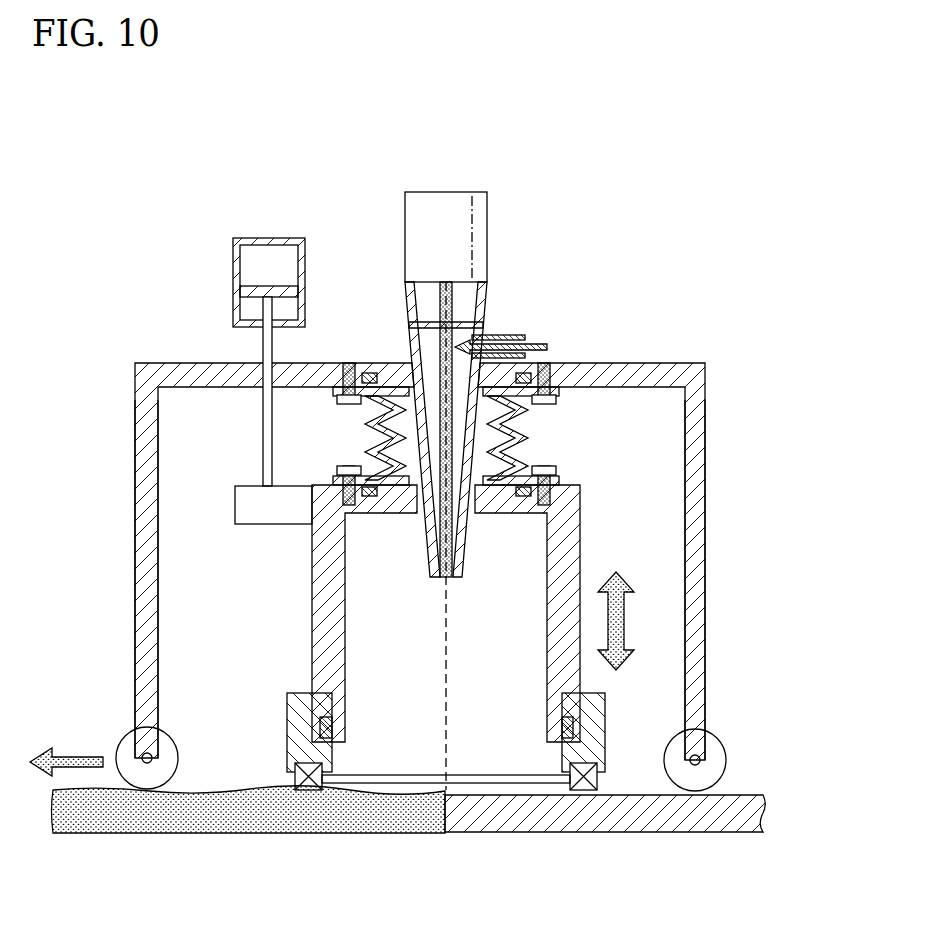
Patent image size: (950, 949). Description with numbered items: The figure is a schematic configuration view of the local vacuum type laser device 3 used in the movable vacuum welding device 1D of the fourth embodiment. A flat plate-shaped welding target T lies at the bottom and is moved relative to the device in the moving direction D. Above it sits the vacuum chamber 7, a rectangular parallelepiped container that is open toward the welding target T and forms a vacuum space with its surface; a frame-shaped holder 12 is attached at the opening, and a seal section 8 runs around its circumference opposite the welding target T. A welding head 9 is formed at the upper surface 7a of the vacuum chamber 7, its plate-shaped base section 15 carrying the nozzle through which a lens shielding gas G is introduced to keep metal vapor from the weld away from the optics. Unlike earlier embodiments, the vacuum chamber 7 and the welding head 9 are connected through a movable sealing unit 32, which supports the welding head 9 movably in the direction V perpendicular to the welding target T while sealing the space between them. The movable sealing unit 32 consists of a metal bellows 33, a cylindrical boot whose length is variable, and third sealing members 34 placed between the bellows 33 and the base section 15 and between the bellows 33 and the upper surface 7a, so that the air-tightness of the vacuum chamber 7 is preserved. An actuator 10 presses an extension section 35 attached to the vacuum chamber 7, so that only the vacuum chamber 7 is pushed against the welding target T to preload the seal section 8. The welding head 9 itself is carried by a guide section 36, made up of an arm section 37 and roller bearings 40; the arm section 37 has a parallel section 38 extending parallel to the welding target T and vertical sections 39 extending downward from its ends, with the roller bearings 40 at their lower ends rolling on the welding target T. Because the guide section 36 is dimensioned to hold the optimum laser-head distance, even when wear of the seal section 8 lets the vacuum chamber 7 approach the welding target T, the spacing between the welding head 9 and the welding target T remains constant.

The movable vacuum welding device 1D is at (126, 168).
The local vacuum type laser device 3 is at (626, 226).
The vacuum chamber 7 is at (312, 653).
The upper surface 7a is at (570, 487).
The seal section 8 is at (605, 780).
The welding head 9 is at (496, 243).
The actuator 10 is at (270, 258).
The holder 12 is at (292, 712).
The base section 15 is at (330, 372).
The movable sealing unit 32 is at (548, 422).
The bellows 33 is at (537, 430).
The third sealing member 34 is at (538, 376).
The extension section 35 is at (278, 508).
The guide section 36 is at (108, 451).
The arm section 37 is at (770, 306).
The parallel section 38 is at (658, 380).
The vertical section 39 is at (700, 413).
The roller bearing 40 is at (165, 752).
The lens shielding gas G is at (536, 344).
The direction perpendicular to the surface of the welding target V is at (636, 622).
The moving direction D is at (78, 748).
The welding target T is at (737, 800).